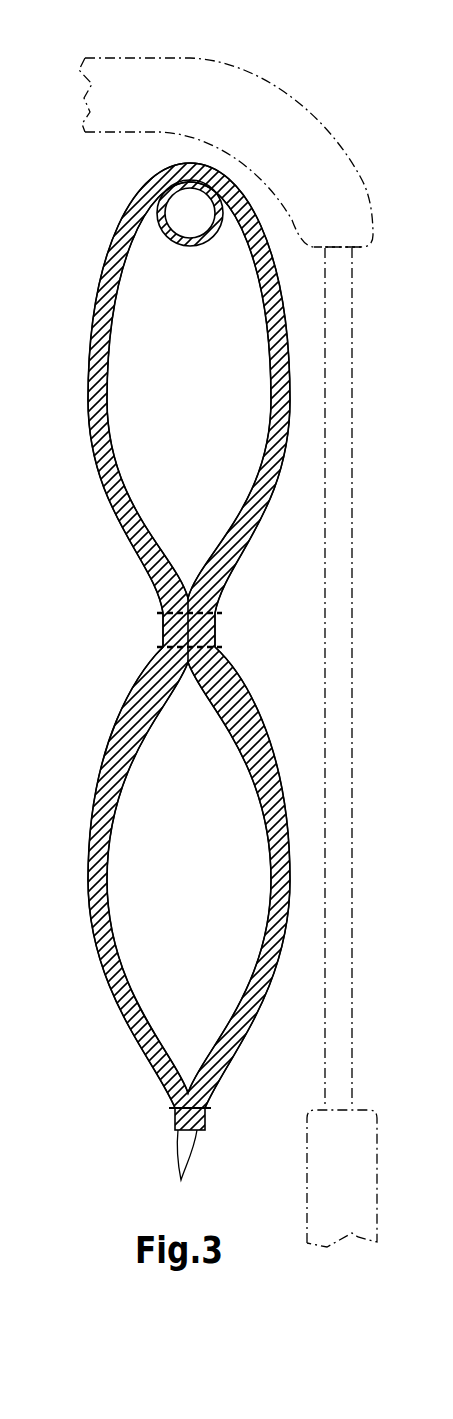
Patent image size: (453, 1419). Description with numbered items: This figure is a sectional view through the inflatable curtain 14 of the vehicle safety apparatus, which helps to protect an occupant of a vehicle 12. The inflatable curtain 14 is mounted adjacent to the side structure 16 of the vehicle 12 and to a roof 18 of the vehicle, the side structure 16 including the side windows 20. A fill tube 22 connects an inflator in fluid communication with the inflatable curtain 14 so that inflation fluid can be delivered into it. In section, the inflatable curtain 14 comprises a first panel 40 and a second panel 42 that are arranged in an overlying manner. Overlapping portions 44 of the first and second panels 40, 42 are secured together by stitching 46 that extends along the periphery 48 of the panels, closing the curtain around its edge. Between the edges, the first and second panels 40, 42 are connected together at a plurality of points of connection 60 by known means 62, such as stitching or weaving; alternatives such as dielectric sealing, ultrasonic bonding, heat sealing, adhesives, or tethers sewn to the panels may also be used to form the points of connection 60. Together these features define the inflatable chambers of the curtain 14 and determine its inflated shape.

The vehicle 12 is at (300, 108).
The inflatable curtain 14 is at (100, 300).
The side structure 16 is at (355, 230).
The roof 18 is at (212, 98).
The side windows 20 is at (337, 777).
The fill tube 22 is at (188, 247).
The first panel 40 is at (271, 400).
The second panel 42 is at (92, 398).
The overlapping portions 44 is at (181, 1169).
The stitching 46 is at (175, 1107).
The periphery 48 is at (205, 1118).
The points of connection 60 is at (170, 630).
The means 62 is at (218, 646).